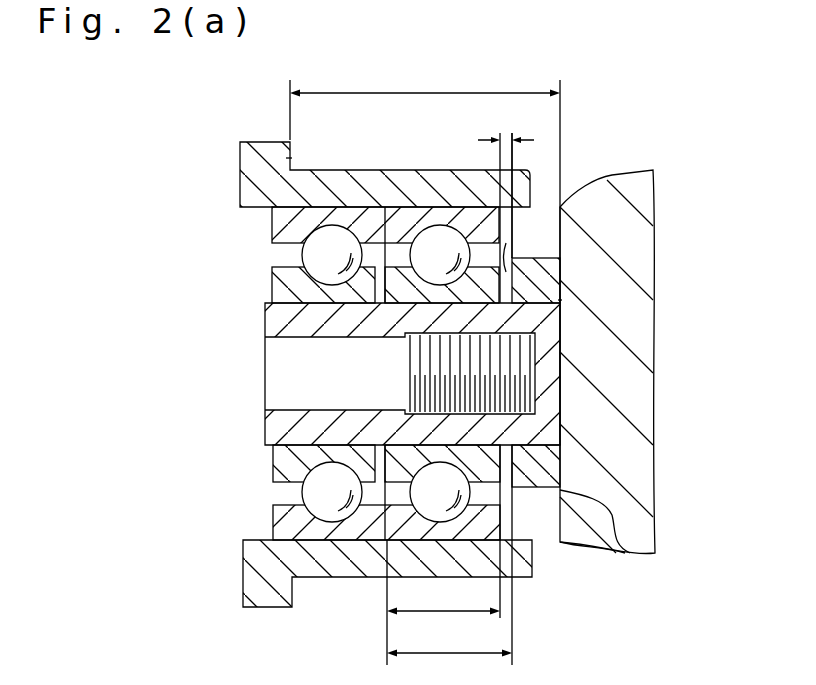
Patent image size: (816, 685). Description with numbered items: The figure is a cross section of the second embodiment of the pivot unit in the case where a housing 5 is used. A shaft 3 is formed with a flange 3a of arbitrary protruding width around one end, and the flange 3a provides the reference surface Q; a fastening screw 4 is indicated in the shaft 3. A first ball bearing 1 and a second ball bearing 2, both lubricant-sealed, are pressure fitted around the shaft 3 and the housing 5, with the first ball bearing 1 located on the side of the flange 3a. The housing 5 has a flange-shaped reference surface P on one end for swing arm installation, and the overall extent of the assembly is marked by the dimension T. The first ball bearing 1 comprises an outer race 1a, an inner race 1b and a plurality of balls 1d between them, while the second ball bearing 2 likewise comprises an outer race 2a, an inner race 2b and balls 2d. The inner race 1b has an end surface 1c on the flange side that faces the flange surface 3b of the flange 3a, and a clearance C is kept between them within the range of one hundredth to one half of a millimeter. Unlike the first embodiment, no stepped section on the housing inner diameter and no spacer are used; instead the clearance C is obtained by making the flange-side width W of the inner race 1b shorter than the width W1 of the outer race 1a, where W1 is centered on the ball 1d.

The first ball bearing 1 is at (653, 553).
The outer race 1a is at (533, 528).
The inner race 1b is at (500, 445).
The end surface 1c is at (502, 282).
The balls 1d is at (520, 498).
The second ball bearing 2 is at (326, 490).
The outer race 2a is at (248, 541).
The inner race 2b is at (283, 460).
The balls 2d is at (304, 494).
The shaft 3 is at (448, 299).
The flange 3a is at (525, 267).
The flange surface 3b is at (506, 262).
The fastening screw 4 is at (482, 357).
The housing 5 is at (369, 178).
The reference surface P is at (286, 158).
The reference surface Q is at (562, 300).
The dimension T is at (425, 135).
The clearance C is at (506, 204).
The width W is at (443, 602).
The width W1 is at (449, 555).